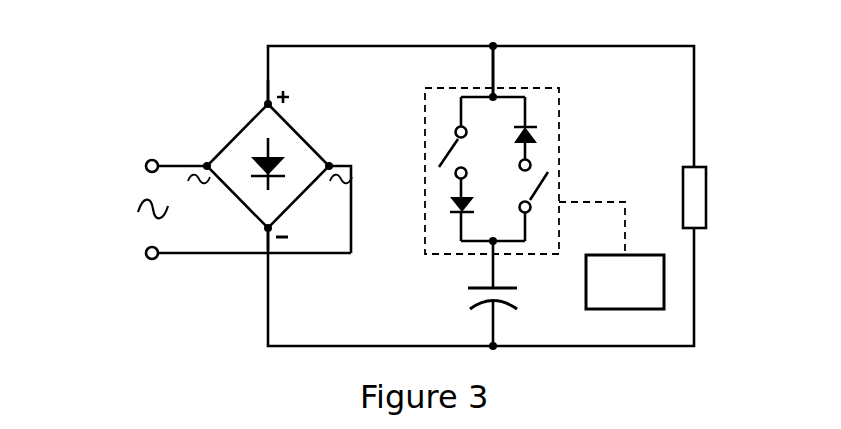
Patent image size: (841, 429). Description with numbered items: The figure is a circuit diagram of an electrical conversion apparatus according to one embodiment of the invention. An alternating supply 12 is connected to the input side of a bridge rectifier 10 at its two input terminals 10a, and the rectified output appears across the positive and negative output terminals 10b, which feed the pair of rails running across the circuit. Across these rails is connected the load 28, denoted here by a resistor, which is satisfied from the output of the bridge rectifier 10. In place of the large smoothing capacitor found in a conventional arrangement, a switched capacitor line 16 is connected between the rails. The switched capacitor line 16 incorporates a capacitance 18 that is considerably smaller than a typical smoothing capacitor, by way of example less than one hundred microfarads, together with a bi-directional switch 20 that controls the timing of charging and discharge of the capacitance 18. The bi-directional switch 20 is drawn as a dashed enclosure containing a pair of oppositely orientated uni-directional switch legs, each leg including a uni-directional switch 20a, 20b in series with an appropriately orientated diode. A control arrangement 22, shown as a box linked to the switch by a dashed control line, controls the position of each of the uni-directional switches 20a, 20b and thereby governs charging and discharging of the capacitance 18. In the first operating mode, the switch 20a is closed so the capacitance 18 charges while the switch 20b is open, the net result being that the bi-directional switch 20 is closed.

The bridge rectifier 10 is at (250, 152).
The AC input terminals of rectifier 10a is at (202, 164).
The DC output terminals of rectifier 10b is at (266, 103).
The AC voltage source 12 is at (135, 206).
The switched capacitor line 16 is at (490, 66).
The capacitance 18 is at (467, 300).
The bi-directional switch 20 is at (553, 88).
The uni-directional switch 20a is at (452, 157).
The uni-directional switch 20b is at (540, 175).
The control arrangement 22 is at (611, 255).
The load 28 is at (713, 195).